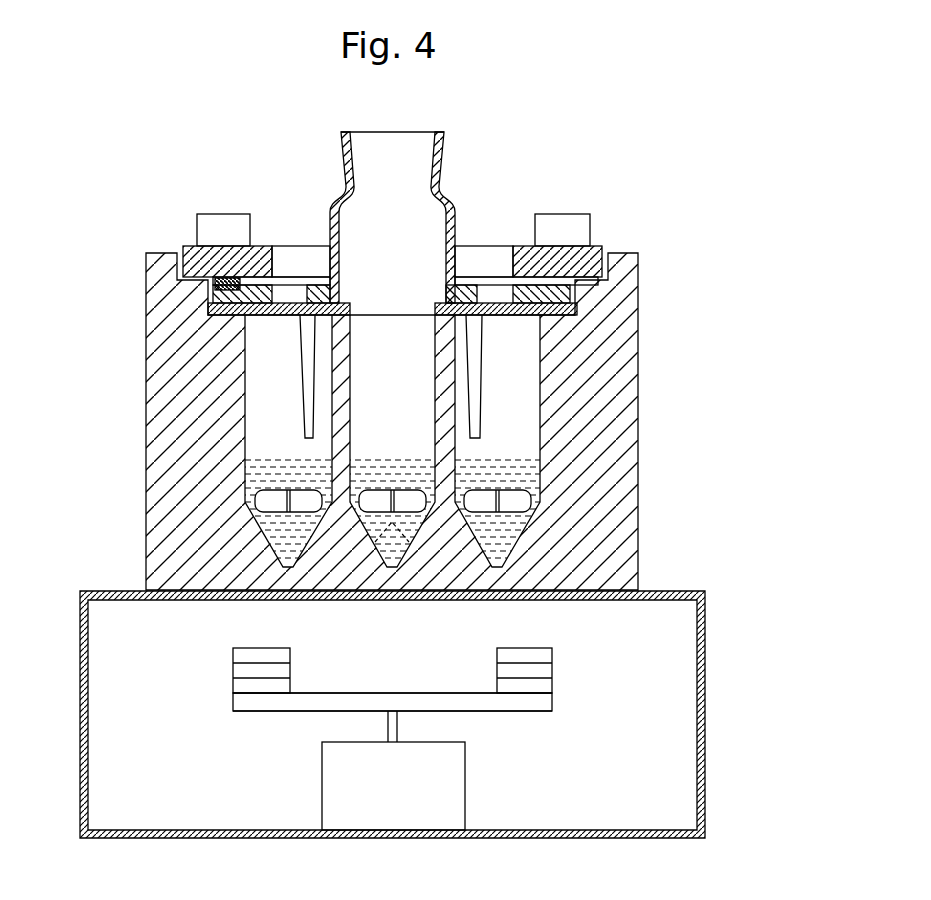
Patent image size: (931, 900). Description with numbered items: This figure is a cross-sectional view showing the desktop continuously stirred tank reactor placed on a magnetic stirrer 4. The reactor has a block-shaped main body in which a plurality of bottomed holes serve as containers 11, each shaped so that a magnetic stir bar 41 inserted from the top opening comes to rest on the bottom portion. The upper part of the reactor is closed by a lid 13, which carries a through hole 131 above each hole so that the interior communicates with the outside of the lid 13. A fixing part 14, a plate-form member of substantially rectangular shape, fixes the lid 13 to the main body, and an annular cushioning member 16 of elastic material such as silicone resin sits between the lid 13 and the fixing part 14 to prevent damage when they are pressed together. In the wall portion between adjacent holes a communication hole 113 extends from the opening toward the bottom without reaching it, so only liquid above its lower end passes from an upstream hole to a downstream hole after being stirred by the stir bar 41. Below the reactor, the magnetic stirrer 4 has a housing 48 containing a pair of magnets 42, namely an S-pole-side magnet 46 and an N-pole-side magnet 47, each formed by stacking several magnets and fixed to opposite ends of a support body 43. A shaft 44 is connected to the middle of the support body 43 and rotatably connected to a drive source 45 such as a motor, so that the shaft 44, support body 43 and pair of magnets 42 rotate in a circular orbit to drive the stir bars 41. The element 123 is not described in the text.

The magnetic stirrer 4 is at (747, 570).
The container 11 is at (522, 375).
The lid 13 is at (572, 296).
The fixing part 14 is at (602, 247).
The cushioning member 16 is at (598, 277).
The magnetic stir bar 41 is at (512, 492).
The pair of magnets 42 is at (536, 710).
The support body 43 is at (502, 712).
The shaft 44 is at (397, 727).
The drive source 45 is at (465, 786).
The S-pole-side magnet 46 is at (553, 655).
The N-pole-side magnet 47 is at (290, 678).
The housing 48 is at (707, 617).
The communication hole 113 is at (303, 393).
The base plate 123 is at (210, 310).
The through hole 131 is at (222, 278).